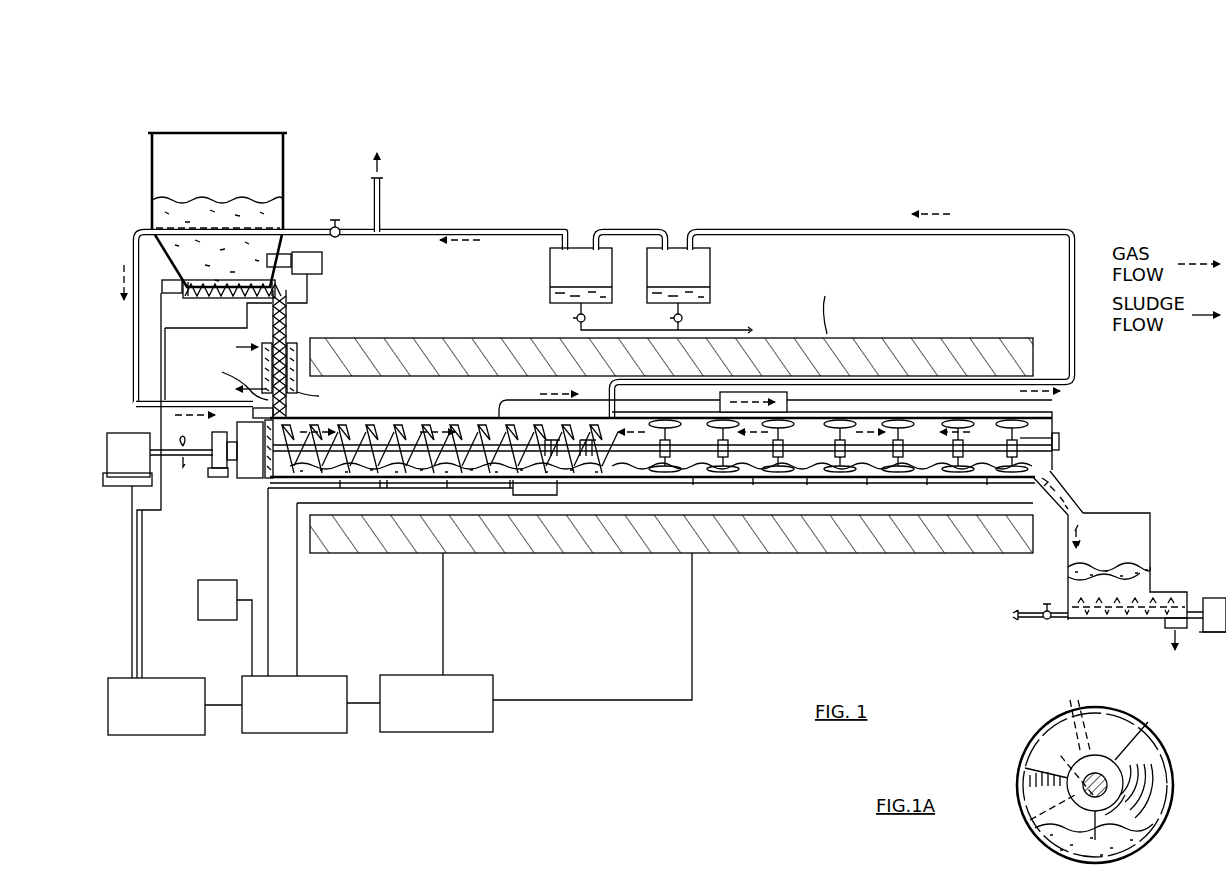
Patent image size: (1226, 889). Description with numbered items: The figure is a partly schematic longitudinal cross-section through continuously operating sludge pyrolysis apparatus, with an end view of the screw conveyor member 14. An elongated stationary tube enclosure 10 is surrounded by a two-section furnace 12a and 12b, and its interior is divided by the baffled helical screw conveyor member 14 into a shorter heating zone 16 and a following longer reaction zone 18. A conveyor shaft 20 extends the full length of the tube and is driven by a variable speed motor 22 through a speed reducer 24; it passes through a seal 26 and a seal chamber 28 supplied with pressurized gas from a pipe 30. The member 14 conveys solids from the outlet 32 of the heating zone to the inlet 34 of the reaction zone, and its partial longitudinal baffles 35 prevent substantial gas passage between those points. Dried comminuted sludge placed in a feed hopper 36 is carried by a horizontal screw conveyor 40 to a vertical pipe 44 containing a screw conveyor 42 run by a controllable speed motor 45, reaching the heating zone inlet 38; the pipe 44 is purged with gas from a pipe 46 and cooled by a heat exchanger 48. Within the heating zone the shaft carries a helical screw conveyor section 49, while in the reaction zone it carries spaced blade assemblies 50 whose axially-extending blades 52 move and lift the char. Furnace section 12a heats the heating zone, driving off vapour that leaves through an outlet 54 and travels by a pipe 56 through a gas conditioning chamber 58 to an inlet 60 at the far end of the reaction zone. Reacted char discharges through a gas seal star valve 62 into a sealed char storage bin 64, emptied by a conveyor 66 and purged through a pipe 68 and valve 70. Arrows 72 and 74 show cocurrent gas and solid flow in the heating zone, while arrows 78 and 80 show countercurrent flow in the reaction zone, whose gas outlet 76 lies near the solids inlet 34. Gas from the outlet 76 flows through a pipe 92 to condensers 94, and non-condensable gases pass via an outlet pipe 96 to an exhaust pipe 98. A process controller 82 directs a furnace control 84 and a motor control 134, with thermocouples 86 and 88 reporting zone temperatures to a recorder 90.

In FIG. 1, the stationary tube enclosure 10 is at (1056, 406).
In FIG. 1A, the stationary tube enclosure 10 is at (1031, 732).
In FIG. 1, the furnace section 12a is at (411, 335).
In FIG. 1, the furnace section 12b is at (835, 583).
In FIG. 1, the screw conveyor member 14 is at (555, 488).
In FIG. 1A, the screw conveyor member 14 is at (1148, 722).
In FIG. 1, the heating zone 16 is at (400, 417).
In FIG. 1, the reaction zone 18 is at (758, 468).
In FIG. 1, the conveyor shaft 20 is at (240, 440).
In FIG. 1A, the conveyor shaft 20 is at (1100, 780).
In FIG. 1, the variable speed motor 22 is at (114, 432).
In FIG. 1, the speed reducer 24 is at (214, 468).
In FIG. 1, the seal 26 is at (268, 478).
In FIG. 1, the seal chamber 28 is at (245, 478).
In FIG. 1, the pipe 30 is at (132, 330).
In FIG. 1, the solids outlet 32 is at (499, 480).
In FIG. 1, the solids inlet 34 is at (598, 470).
In FIG. 1, the partial longitudinal baffles 35 is at (568, 470).
In FIG. 1A, the partial longitudinal baffles 35 is at (1042, 757).
In FIG. 1, the feed hopper 36 is at (283, 172).
In FIG. 1, the heating zone inlet 38 is at (273, 412).
In FIG. 1, the horizontal screw conveyor 40 is at (232, 296).
In FIG. 1, the screw conveyor 42 is at (322, 396).
In FIG. 1, the vertical pipe 44 is at (288, 315).
In FIG. 1, the controllable speed motor 45 is at (322, 262).
In FIG. 1, the pipe 46 is at (229, 380).
In FIG. 1, the heat exchanger 48 is at (297, 355).
In FIG. 1, the helical screw conveyor section 49 is at (424, 488).
In FIG. 1, the blade assemblies 50 is at (828, 468).
In FIG. 1, the axially-extending blades 52 is at (940, 430).
In FIG. 1, the outlet 54 is at (514, 394).
In FIG. 1, the pipe 56 is at (534, 394).
In FIG. 1, the gas conditioning chamber 58 is at (775, 392).
In FIG. 1, the inlet 60 is at (964, 426).
In FIG. 1, the gas seal star valve 62 is at (1055, 470).
In FIG. 1, the sealed char storage bin 64 is at (1117, 514).
In FIG. 1, the conveyor 66 is at (1124, 620).
In FIG. 1, the pipe 68 is at (1022, 622).
In FIG. 1, the valve 70 is at (1047, 622).
In FIG. 1, the arrow 72 is at (484, 420).
In FIG. 1, the arrow 74 is at (451, 488).
In FIG. 1, the outlet 76 is at (586, 400).
In FIG. 1, the arrow 78 is at (852, 422).
In FIG. 1, the arrow 80 is at (676, 478).
In FIG. 1, the process controller 82 is at (323, 676).
In FIG. 1, the furnace control 84 is at (474, 675).
In FIG. 1, the thermocouple 86 is at (348, 488).
In FIG. 1, the thermocouple 88 is at (634, 474).
In FIG. 1, the recorder 90 is at (198, 594).
In FIG. 1, the pipe 92 is at (872, 231).
In FIG. 1, the condensers 94 is at (647, 248).
In FIG. 1, the outlet pipe 96 is at (465, 226).
In FIG. 1, the exhaust pipe 98 is at (381, 185).
In FIG. 1, the motor control 134 is at (163, 680).